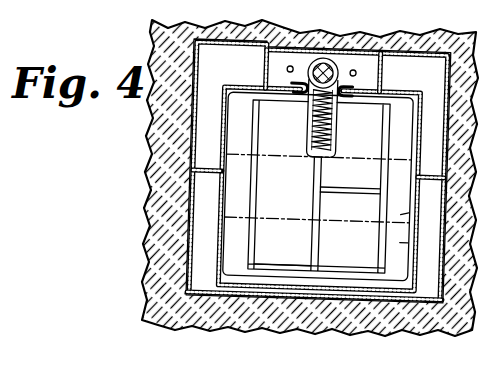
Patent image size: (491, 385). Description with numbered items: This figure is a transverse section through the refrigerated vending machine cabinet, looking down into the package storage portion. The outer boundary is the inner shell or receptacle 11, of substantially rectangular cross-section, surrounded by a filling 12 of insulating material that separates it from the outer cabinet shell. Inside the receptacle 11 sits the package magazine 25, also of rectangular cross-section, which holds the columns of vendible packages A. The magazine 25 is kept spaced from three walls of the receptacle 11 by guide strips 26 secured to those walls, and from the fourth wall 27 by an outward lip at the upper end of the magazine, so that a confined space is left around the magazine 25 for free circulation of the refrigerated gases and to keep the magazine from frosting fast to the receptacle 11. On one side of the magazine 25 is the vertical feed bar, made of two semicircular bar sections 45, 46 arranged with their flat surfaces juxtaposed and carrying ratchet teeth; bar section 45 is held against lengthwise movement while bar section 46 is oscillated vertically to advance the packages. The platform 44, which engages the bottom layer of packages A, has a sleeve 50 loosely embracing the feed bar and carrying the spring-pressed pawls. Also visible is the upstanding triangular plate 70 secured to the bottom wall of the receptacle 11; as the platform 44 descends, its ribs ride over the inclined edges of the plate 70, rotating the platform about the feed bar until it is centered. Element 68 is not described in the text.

The inner shell or receptacle 11 is at (190, 267).
The filling of insulating material 12 is at (361, 318).
The package magazine 25 is at (282, 204).
The guide strips 26 is at (264, 63).
The fourth wall 27 is at (268, 297).
The platform 44 is at (258, 252).
The bar section 45 is at (321, 58).
The bar section 46 is at (337, 60).
The sleeve 50 is at (304, 66).
The panes 68 is at (313, 173).
The triangular plate 70 is at (352, 197).
The vendible package A is at (419, 228).